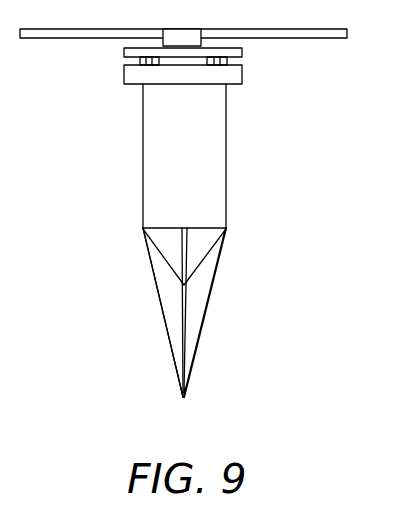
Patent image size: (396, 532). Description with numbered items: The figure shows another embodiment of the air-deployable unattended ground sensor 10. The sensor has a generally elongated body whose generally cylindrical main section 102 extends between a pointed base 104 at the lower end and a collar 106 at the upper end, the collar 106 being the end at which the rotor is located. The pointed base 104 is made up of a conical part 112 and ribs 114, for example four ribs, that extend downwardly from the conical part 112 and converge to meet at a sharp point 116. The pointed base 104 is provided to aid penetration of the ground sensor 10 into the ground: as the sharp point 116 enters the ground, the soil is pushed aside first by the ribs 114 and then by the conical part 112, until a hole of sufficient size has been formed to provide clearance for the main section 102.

The ground sensor 10 is at (183, 238).
The cylindrical main section 102 is at (184, 156).
The pointed base 104 is at (216, 304).
The collar 106 is at (126, 75).
The conical part 112 is at (162, 247).
The ribs 114 is at (165, 313).
The sharp point 116 is at (183, 398).